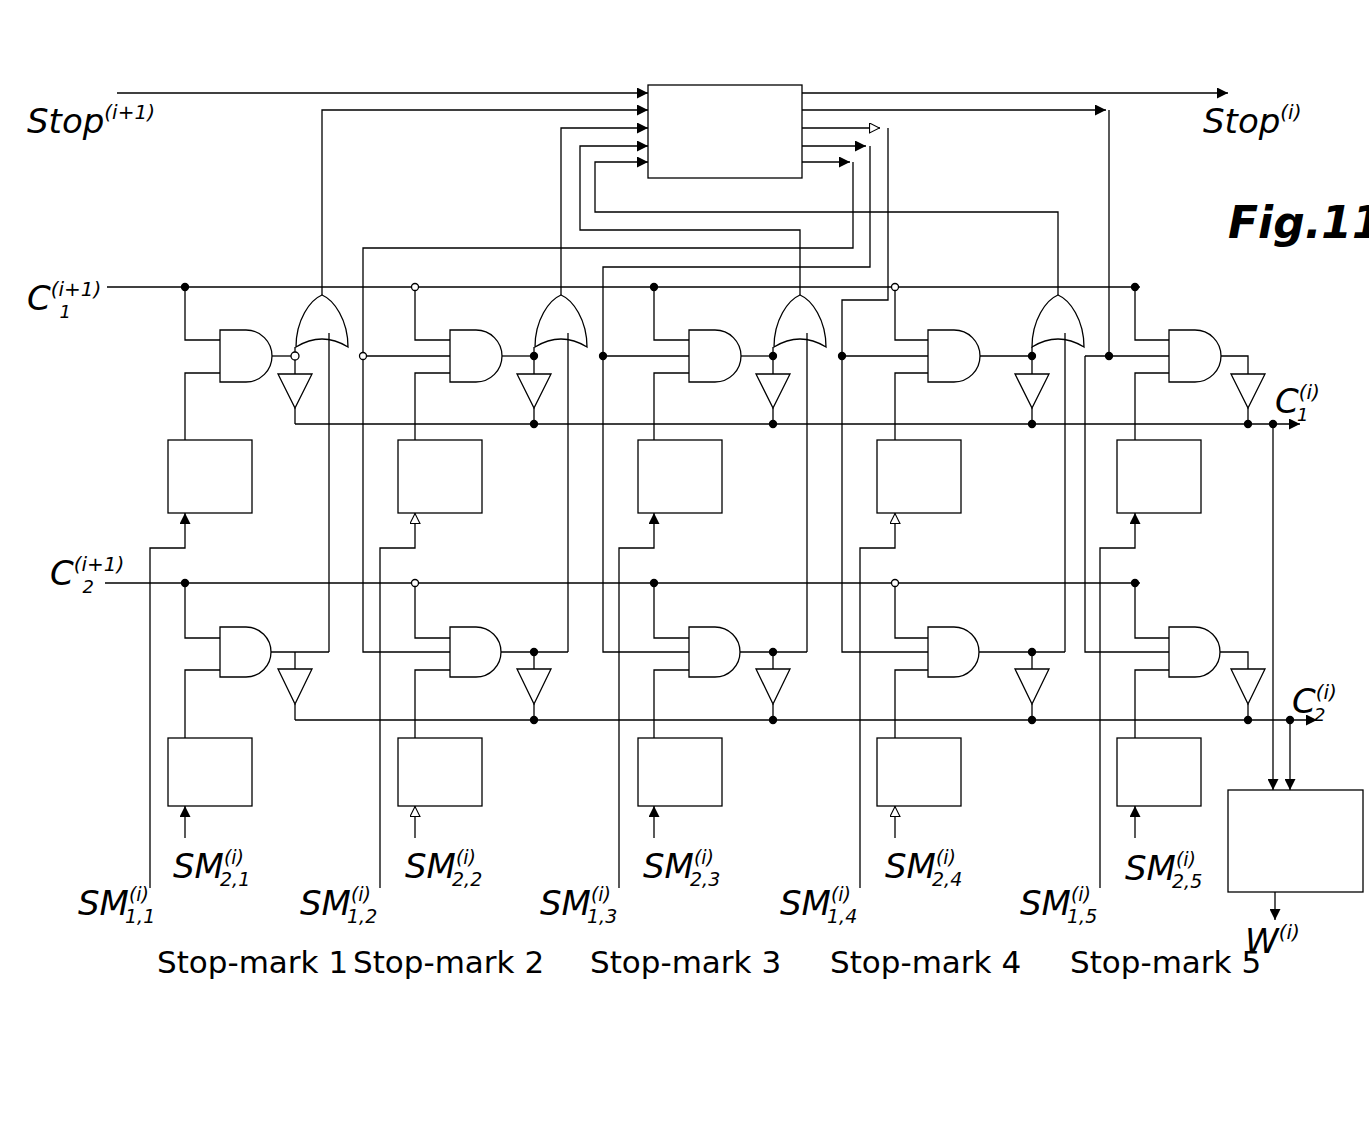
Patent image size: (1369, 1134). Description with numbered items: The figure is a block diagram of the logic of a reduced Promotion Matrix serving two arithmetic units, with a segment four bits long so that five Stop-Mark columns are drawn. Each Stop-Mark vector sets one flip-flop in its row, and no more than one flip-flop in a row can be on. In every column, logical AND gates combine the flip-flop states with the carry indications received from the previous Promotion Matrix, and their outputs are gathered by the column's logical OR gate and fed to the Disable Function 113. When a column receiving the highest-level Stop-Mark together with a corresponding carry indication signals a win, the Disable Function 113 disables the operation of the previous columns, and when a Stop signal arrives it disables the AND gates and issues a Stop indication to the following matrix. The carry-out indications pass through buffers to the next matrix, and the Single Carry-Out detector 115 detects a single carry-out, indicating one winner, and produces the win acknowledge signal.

The Disable Function 113 is at (772, 180).
The Single Carry-Out detector 115 is at (1317, 893).